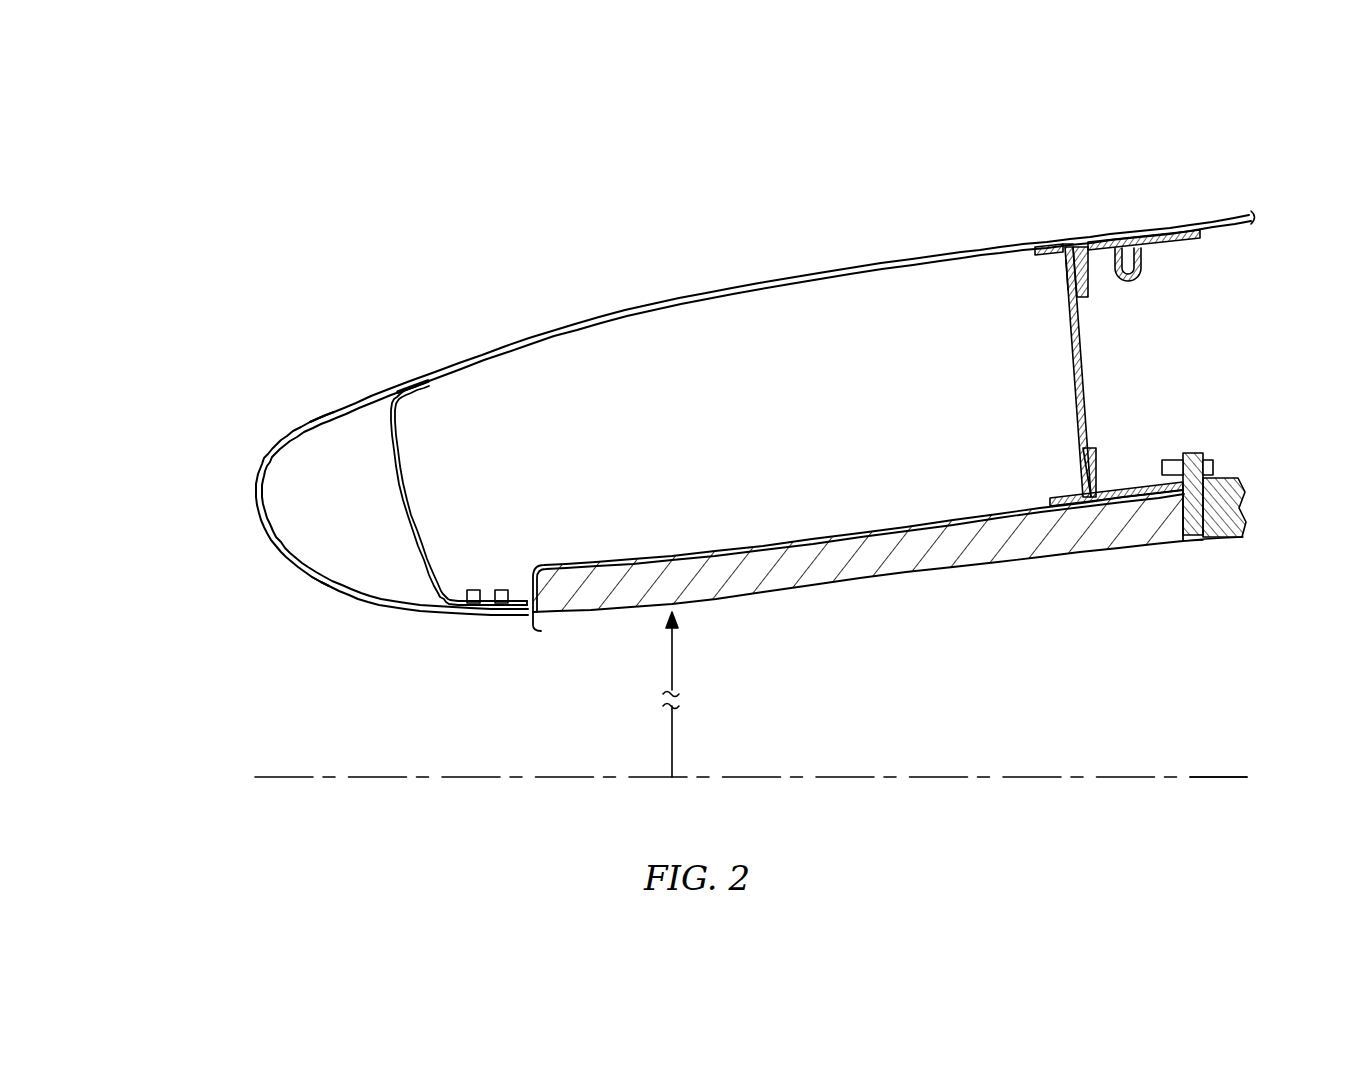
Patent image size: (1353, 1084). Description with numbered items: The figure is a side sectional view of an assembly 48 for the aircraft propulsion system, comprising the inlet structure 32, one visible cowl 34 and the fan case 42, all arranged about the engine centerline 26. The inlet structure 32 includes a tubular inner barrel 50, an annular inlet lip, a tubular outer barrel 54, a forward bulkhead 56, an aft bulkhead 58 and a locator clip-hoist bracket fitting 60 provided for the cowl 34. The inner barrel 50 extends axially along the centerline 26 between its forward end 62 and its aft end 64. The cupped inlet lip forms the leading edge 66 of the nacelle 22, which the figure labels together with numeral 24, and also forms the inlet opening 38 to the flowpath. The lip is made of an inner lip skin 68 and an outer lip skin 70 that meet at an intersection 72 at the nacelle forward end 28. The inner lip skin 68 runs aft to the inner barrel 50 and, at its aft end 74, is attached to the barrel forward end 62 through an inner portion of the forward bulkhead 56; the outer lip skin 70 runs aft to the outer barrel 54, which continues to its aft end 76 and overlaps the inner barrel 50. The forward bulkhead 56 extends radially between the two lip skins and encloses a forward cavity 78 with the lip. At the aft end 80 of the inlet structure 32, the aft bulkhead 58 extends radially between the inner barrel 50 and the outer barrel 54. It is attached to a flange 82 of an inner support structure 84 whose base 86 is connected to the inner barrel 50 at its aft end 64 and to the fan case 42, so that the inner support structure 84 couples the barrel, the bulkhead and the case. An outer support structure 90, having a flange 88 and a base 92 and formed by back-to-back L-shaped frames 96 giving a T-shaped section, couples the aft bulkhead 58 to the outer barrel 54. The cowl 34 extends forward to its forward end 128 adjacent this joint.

The nacelle 22 is at (266, 275).
The nacelle 24 is at (332, 289).
The centerline 26 is at (1220, 777).
The nacelle forward end 28 is at (166, 500).
The inlet structure 32 is at (663, 277).
The cowl 34 is at (1203, 184).
The inlet opening 38 is at (278, 715).
The fan case 42 is at (1247, 515).
The assembly 48 is at (343, 237).
The inner barrel 50 is at (880, 607).
The outer barrel 54 is at (580, 312).
The forward bulkhead 56 is at (428, 502).
The aft bulkhead 58 is at (1052, 378).
The locator clip-hoist bracket fitting 60 is at (1118, 296).
The forward end of the inner barrel 62 is at (533, 615).
The aft end of the inner barrel 64 is at (1190, 541).
The leading edge 66 is at (166, 500).
The inner lip skin 68 is at (323, 587).
The outer lip skin 70 is at (309, 427).
The intersection 72 is at (256, 490).
The aft end of the inner lip skin 74 is at (524, 612).
The aft end of the outer barrel 76 is at (1064, 244).
The forward cavity 78 is at (329, 511).
The aft end of the inlet structure 80 is at (1155, 277).
The flange 82 is at (1095, 465).
The inner support structure 84 is at (1132, 478).
The base 86 is at (1148, 490).
The flange 88 is at (1082, 300).
The outer support structure 90 is at (1060, 284).
The base 92 is at (1040, 247).
The frame 96 is at (389, 371).
The forward end of the cowl 128 is at (1076, 240).